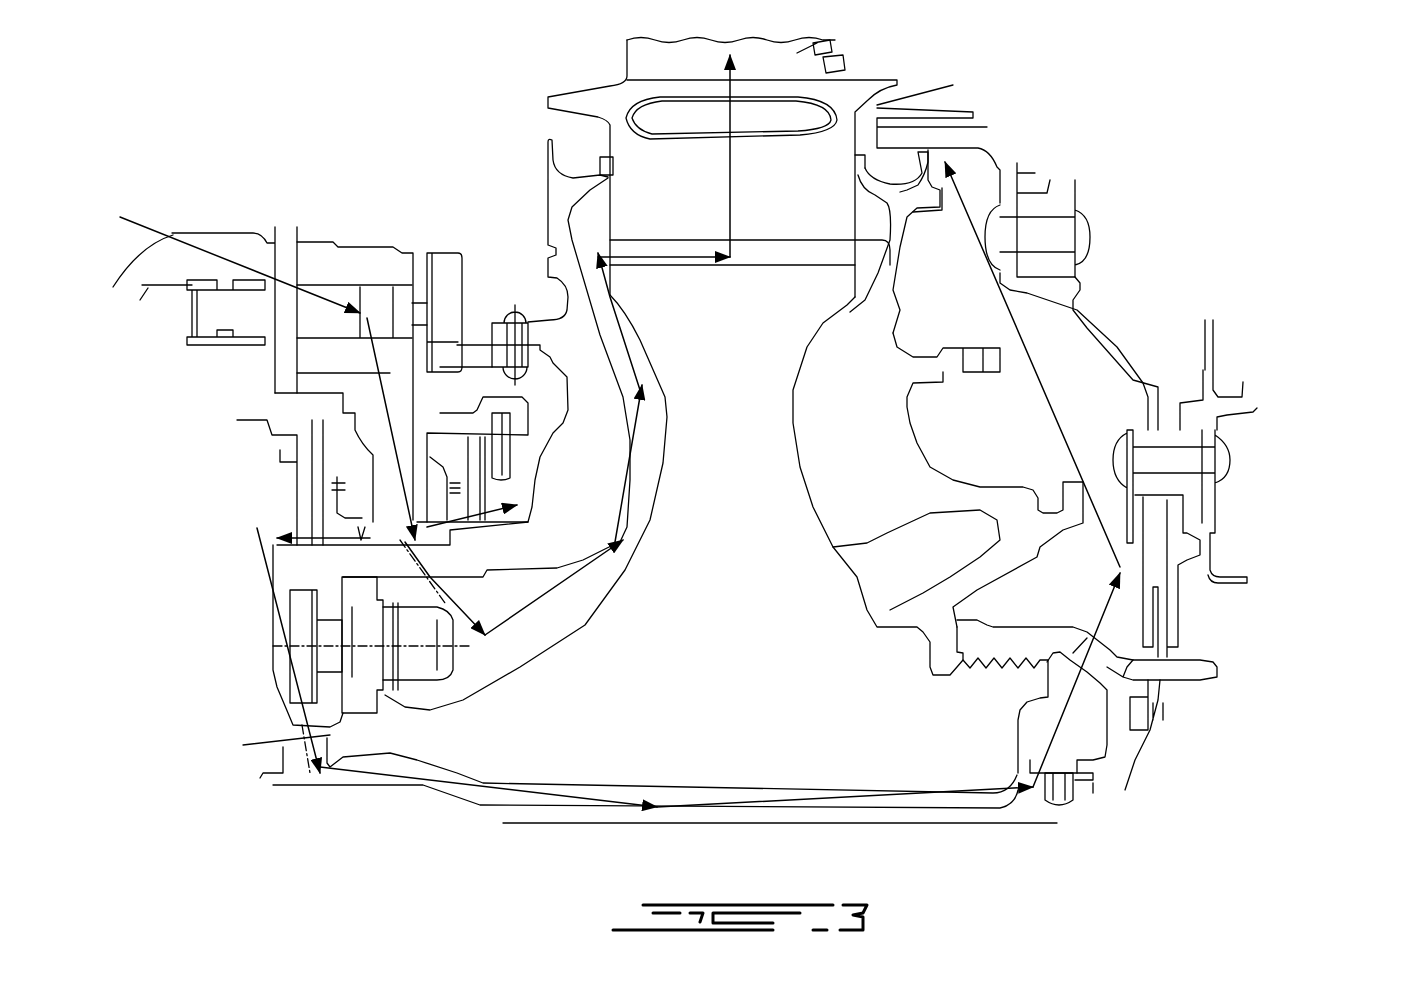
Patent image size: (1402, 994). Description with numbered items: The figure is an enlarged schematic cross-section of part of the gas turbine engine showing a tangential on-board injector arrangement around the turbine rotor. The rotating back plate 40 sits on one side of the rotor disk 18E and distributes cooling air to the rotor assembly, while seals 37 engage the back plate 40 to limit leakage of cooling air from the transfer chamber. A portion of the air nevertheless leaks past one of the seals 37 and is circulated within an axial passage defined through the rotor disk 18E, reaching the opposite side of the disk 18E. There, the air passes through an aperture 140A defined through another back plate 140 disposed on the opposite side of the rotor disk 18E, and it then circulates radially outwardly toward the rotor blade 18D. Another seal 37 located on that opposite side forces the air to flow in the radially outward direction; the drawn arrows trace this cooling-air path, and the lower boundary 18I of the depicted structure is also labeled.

The rotor blade 18D is at (840, 40).
The rotor disk 18E is at (750, 593).
The back plate 40 is at (590, 483).
The back plate 140 is at (885, 470).
The aperture 140A is at (1107, 667).
The seal 37 is at (1203, 610).
The inner casing 18I is at (903, 827).